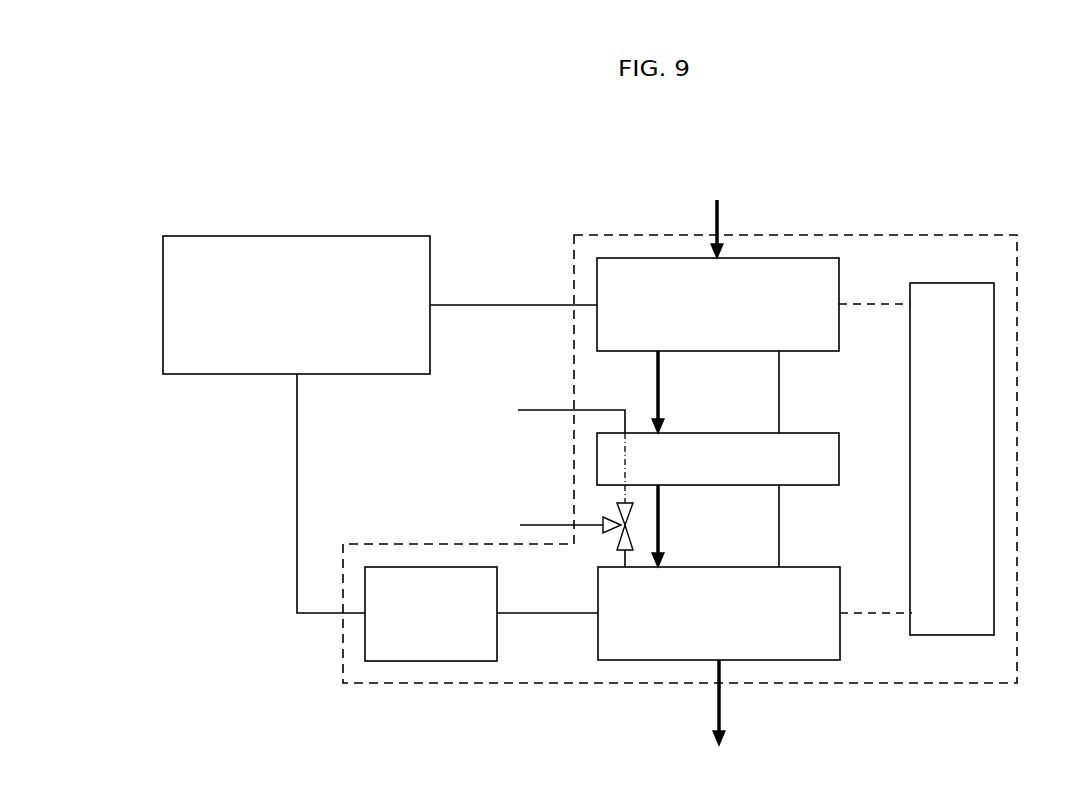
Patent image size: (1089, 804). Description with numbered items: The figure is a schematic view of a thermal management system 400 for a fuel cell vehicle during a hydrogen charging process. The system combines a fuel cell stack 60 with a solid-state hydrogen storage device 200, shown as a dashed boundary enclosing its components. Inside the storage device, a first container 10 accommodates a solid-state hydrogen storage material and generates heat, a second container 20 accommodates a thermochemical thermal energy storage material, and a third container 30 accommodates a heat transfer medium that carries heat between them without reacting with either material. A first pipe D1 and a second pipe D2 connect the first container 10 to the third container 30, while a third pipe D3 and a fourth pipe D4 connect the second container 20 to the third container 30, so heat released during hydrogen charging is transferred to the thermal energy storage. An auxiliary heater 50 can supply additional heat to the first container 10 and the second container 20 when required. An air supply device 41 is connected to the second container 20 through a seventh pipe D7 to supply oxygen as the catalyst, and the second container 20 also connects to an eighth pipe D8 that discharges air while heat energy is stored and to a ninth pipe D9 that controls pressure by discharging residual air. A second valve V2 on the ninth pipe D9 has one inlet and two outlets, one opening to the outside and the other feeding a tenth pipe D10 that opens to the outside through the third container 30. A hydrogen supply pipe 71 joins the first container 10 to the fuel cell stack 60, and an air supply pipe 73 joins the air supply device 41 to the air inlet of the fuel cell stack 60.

The thermal management system 400 is at (654, 127).
The solid-state hydrogen storage device 200 is at (1006, 224).
The first container 10 is at (778, 258).
The second container 20 is at (763, 660).
The third container 30 is at (839, 459).
The air supply device 41 is at (429, 661).
The auxiliary heater 50 is at (994, 369).
The fuel cell stack 60 is at (311, 318).
The hydrogen supply pipe 71 is at (493, 303).
The air supply pipe 73 is at (297, 509).
The first pipe D1 is at (779, 393).
The second pipe D2 is at (660, 379).
The third pipe D3 is at (660, 514).
The fourth pipe D4 is at (779, 528).
The seventh pipe D7 is at (539, 616).
The eighth pipe D8 is at (717, 708).
The ninth pipe D9 is at (622, 557).
The tenth pipe D10 is at (531, 412).
The second valve V2 is at (588, 526).